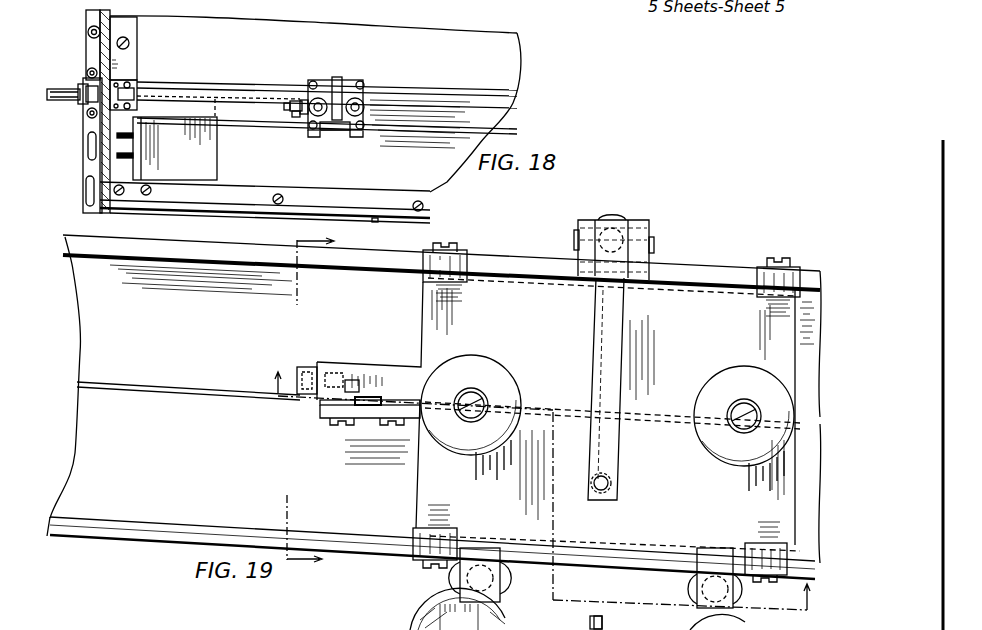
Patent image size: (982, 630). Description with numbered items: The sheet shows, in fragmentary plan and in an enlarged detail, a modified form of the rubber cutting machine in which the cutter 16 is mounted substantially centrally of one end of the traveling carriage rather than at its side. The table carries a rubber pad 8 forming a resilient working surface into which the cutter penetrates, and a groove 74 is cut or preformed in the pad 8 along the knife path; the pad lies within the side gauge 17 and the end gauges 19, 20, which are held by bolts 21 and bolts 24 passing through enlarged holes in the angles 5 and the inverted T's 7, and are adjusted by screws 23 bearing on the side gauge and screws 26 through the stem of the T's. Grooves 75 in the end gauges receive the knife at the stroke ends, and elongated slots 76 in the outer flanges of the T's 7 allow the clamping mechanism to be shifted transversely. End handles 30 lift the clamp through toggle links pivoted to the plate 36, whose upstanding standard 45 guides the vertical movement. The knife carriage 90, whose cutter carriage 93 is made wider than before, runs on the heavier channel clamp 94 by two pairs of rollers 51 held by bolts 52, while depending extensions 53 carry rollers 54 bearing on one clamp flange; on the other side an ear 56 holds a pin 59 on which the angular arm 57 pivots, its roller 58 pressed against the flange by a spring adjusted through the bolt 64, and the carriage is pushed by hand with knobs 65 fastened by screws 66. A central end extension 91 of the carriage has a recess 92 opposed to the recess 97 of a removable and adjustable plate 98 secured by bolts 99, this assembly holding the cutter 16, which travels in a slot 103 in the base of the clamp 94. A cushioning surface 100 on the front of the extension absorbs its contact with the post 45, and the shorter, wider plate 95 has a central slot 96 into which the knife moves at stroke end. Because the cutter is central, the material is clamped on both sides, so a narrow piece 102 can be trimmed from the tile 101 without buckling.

In FIG. 18, the angles 5 is at (265, 208).
In FIG. 18, the inverted T's 7 is at (86, 13).
In FIG. 18, the rubber pad 8 is at (447, 158).
In FIG. 18, the cutter 16 is at (292, 100).
In FIG. 19, the cutter 16 is at (360, 392).
In FIG. 18, the side gauge 17 is at (432, 205).
In FIG. 18, the end gauge 19 is at (115, 24).
In FIG. 19, the end gauge 20 is at (324, 401).
In FIG. 18, the bolts 21 is at (276, 205).
In FIG. 19, the bolts 21 is at (542, 501).
In FIG. 18, the screws 23 is at (396, 222).
In FIG. 18, the bolts 24 is at (121, 196).
In FIG. 18, the screws 26 is at (88, 40).
In FIG. 18, the end handles 30 is at (56, 99).
In FIG. 18, the plate 36 is at (86, 60).
In FIG. 18, the standard 45 is at (88, 113).
In FIG. 18, the rollers 51 is at (313, 80).
In FIG. 19, the rollers 51 is at (760, 268).
In FIG. 19, the bolts 52 is at (778, 258).
In FIG. 19, the depending extensions 53 is at (502, 592).
In FIG. 19, the rollers 54 is at (498, 574).
In FIG. 19, the ear 56 is at (648, 228).
In FIG. 19, the angular arm 57 is at (598, 314).
In FIG. 19, the roller 58 is at (614, 220).
In FIG. 19, the pin 59 is at (655, 240).
In FIG. 19, the bolt 64 is at (612, 483).
In FIG. 18, the knobs 65 is at (319, 97).
In FIG. 19, the knobs 65 is at (512, 392).
In FIG. 19, the screws 66 is at (472, 390).
In FIG. 18, the groove 74 is at (505, 112).
In FIG. 18, the grooves 75 is at (120, 158).
In FIG. 18, the elongated slots 76 is at (90, 146).
In FIG. 18, the knife carriage 90 is at (345, 80).
In FIG. 19, the knife carriage 90 is at (558, 414).
In FIG. 18, the central end extension 91 is at (303, 98).
In FIG. 19, the central end extension 91 is at (352, 380).
In FIG. 19, the recess 92 is at (366, 397).
In FIG. 18, the cutter carriage 93 is at (340, 131).
In FIG. 19, the cutter carriage 93 is at (676, 465).
In FIG. 18, the channel clamp 94 is at (440, 90).
In FIG. 19, the channel clamp 94 is at (92, 408).
In FIG. 18, the plate 95 is at (128, 82).
In FIG. 18, the central slot 96 is at (136, 92).
In FIG. 19, the recess 97 is at (364, 420).
In FIG. 18, the removable and adjustable plate 98 is at (297, 118).
In FIG. 19, the removable and adjustable plate 98 is at (356, 420).
In FIG. 19, the bolts 99 is at (334, 420).
In FIG. 18, the cushioning surface 100 is at (288, 111).
In FIG. 19, the cushioning surface 100 is at (303, 368).
In FIG. 18, the tile 101 is at (190, 172).
In FIG. 18, the piece 102 is at (208, 96).
In FIG. 18, the slot 103 is at (485, 110).
In FIG. 19, the slot 103 is at (168, 390).